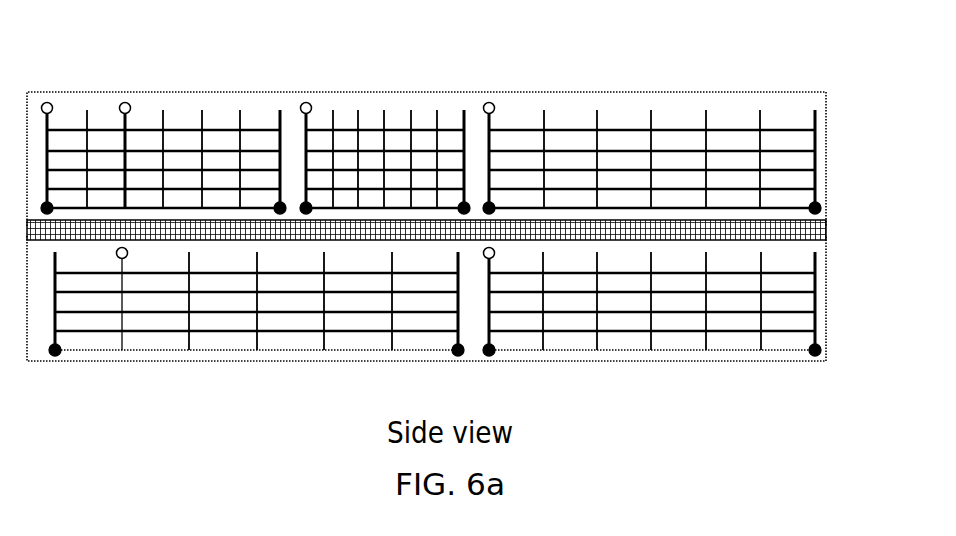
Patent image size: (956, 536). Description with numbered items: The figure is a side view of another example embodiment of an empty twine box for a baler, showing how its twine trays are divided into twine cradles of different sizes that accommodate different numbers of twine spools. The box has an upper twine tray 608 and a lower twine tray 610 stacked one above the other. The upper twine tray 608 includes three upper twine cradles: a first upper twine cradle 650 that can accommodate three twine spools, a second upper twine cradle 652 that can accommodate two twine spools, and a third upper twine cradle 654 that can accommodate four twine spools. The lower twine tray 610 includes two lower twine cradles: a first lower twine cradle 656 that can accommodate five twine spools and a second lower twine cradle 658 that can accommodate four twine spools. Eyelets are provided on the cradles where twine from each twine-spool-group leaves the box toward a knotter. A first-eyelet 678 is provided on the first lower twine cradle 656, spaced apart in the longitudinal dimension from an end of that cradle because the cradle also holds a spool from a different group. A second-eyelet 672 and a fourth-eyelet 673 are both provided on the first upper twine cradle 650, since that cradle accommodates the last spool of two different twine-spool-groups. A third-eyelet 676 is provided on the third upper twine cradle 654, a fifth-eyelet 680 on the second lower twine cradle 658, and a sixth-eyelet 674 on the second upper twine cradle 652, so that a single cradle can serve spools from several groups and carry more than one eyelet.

The upper twine tray 608 is at (836, 165).
The lower twine tray 610 is at (836, 287).
The first upper twine cradle 650 is at (270, 128).
The second upper twine cradle 652 is at (344, 128).
The third upper twine cradle 654 is at (583, 128).
The first lower twine cradle 656 is at (112, 350).
The second lower twine cradle 658 is at (677, 350).
The second-eyelet 672 is at (50, 103).
The fourth-eyelet 673 is at (128, 103).
The sixth-eyelet 674 is at (303, 102).
The third-eyelet 676 is at (485, 104).
The first-eyelet 678 is at (125, 259).
The fifth-eyelet 680 is at (492, 259).